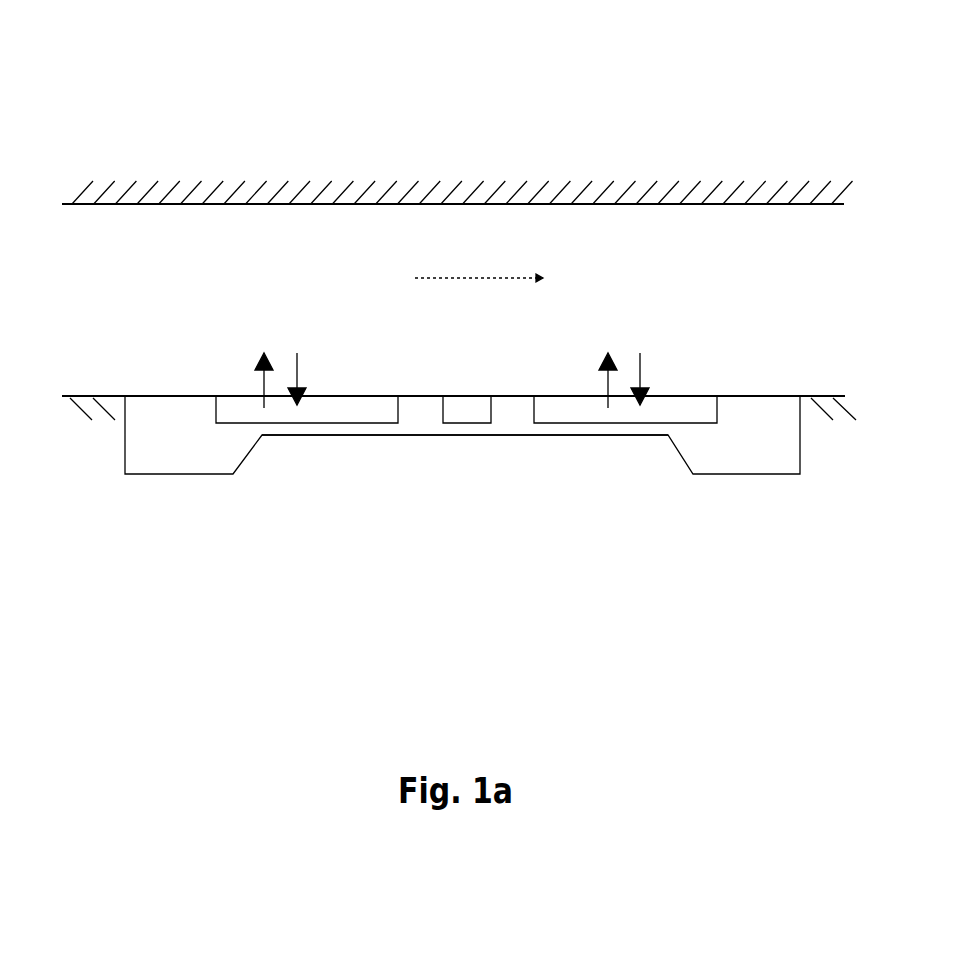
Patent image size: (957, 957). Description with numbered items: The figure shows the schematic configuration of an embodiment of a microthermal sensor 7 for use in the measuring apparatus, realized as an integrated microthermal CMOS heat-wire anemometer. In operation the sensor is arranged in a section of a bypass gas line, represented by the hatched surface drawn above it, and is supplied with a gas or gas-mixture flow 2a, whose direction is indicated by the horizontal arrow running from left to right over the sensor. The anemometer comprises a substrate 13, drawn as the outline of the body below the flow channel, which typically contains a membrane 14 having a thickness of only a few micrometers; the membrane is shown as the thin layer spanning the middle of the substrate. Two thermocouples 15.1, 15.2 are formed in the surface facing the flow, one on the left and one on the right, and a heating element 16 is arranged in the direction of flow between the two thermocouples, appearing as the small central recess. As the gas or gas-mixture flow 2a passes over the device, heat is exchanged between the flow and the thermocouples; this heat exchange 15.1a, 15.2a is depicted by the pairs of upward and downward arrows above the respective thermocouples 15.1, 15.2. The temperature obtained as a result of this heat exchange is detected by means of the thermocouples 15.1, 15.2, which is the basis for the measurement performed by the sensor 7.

The microthermal sensor 7 is at (690, 99).
The gas or gas-mixture flow 2a is at (479, 258).
The substrate 13 is at (167, 447).
The membrane 14 is at (421, 411).
The first thermocouple 15.1 is at (329, 411).
The second thermocouple 15.2 is at (626, 411).
The heating element 16 is at (468, 407).
The heat exchange at first thermocouple 15.1a is at (283, 360).
The heat exchange at second thermocouple 15.2a is at (622, 360).